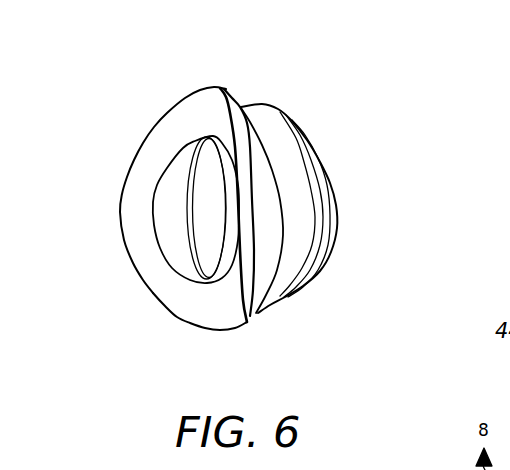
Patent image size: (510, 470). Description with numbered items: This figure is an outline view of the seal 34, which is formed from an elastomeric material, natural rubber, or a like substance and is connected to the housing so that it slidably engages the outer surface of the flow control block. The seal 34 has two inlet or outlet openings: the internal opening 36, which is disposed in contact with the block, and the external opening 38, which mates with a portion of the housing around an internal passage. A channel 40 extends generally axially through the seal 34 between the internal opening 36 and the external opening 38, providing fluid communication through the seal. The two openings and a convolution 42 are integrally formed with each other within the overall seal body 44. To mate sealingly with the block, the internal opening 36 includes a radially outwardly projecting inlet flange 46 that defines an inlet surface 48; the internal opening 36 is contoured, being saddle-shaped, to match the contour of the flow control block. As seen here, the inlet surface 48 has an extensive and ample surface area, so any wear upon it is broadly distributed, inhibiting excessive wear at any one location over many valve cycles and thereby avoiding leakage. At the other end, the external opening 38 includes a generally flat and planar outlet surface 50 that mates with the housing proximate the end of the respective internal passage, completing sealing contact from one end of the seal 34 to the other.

The seal 34 is at (221, 195).
The internal opening 36 is at (113, 230).
The external opening 38 is at (343, 184).
The channel 40 is at (217, 234).
The convolution 42 is at (277, 289).
The seal body 44 is at (172, 106).
The inlet flange 46 is at (217, 307).
The inlet surface 48 is at (150, 173).
The outlet surface 50 is at (354, 124).